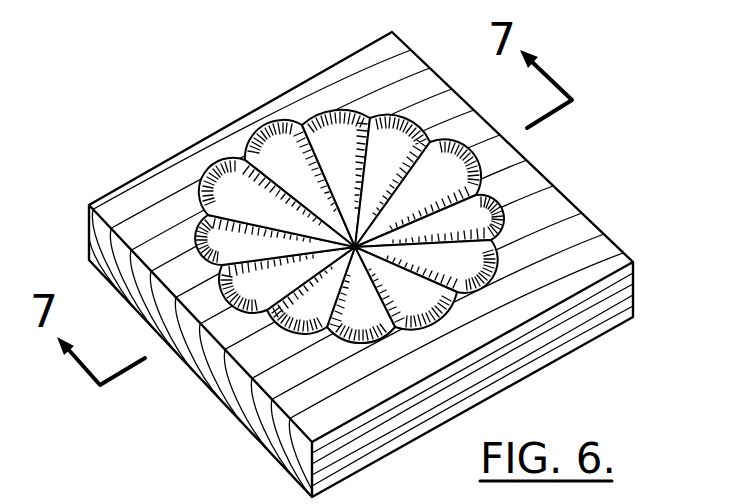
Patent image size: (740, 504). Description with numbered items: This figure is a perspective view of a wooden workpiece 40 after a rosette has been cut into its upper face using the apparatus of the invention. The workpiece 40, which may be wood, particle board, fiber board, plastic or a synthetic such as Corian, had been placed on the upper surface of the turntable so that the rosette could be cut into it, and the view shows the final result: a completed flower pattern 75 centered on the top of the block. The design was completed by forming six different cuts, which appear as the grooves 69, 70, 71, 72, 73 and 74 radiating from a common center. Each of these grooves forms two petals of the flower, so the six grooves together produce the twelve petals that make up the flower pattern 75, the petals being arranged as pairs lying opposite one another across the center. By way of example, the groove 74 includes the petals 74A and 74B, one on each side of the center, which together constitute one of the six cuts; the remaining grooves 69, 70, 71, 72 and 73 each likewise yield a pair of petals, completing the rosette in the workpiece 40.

The workpiece 40 is at (578, 240).
The flower pattern 75 is at (331, 208).
The groove 69 is at (282, 148).
The groove 70 is at (341, 124).
The groove 71 is at (408, 146).
The groove 72 is at (465, 179).
The groove 73 is at (483, 226).
The groove 74 is at (480, 273).
The petal 74A is at (201, 188).
The petal 74B is at (480, 288).